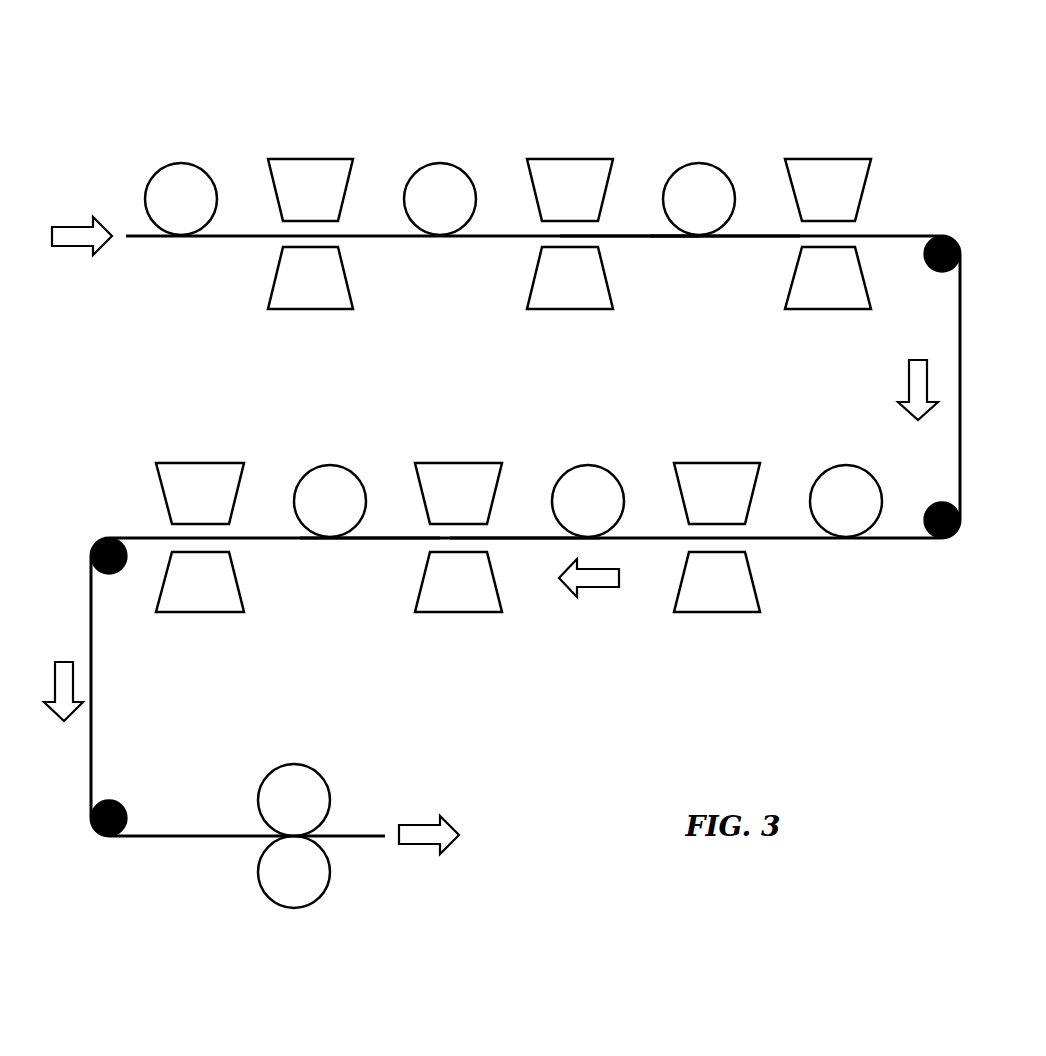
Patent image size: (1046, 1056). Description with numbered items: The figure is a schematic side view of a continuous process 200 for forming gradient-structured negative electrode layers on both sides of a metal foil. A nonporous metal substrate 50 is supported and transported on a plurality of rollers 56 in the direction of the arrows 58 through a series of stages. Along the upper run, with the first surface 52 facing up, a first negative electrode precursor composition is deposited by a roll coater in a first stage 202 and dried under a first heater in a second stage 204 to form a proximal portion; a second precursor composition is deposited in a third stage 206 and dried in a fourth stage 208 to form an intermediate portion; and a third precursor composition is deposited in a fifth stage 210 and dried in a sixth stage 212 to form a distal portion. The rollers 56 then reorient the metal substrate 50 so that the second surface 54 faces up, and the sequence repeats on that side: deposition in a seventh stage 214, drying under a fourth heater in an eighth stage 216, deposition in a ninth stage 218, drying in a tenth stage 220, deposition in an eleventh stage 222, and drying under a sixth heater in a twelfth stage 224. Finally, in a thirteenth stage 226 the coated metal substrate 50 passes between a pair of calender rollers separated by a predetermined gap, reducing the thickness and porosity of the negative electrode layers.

The continuous process 200 is at (502, 467).
The metal substrate 50 is at (488, 234).
The first surface 52 is at (626, 234).
The second surface 54 is at (722, 237).
The rollers 56 is at (947, 238).
The arrows 58 is at (68, 228).
The first stage 202 is at (181, 199).
The second stage 204 is at (310, 234).
The third stage 206 is at (440, 199).
The fourth stage 208 is at (570, 234).
The fifth stage 210 is at (699, 199).
The sixth stage 212 is at (828, 234).
The seventh stage 214 is at (846, 501).
The eighth stage 216 is at (717, 537).
The ninth stage 218 is at (588, 501).
The tenth stage 220 is at (458, 537).
The eleventh stage 222 is at (330, 501).
The twelfth stage 224 is at (200, 537).
The thirteenth stage 226 is at (294, 836).